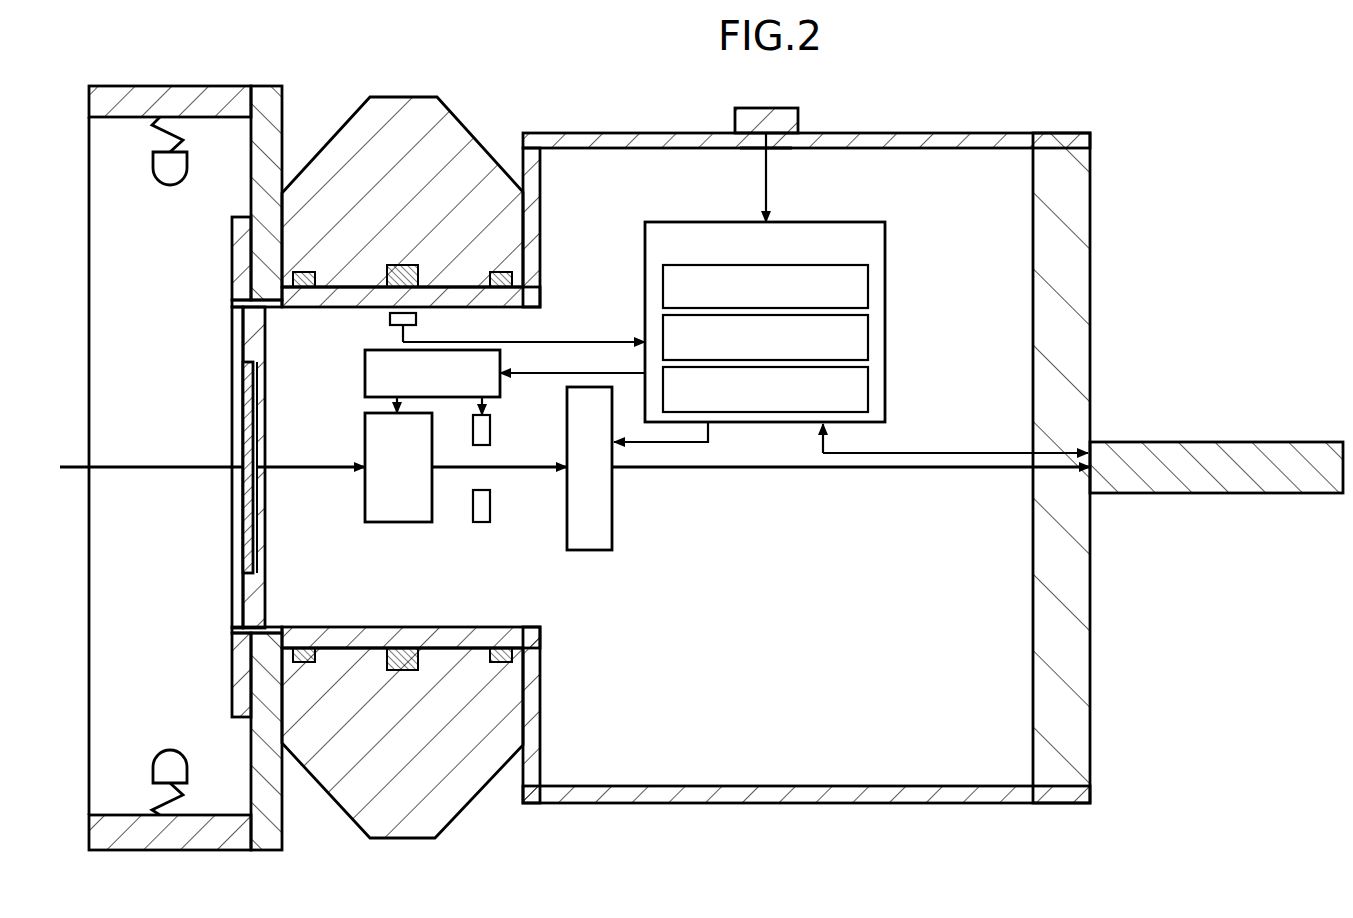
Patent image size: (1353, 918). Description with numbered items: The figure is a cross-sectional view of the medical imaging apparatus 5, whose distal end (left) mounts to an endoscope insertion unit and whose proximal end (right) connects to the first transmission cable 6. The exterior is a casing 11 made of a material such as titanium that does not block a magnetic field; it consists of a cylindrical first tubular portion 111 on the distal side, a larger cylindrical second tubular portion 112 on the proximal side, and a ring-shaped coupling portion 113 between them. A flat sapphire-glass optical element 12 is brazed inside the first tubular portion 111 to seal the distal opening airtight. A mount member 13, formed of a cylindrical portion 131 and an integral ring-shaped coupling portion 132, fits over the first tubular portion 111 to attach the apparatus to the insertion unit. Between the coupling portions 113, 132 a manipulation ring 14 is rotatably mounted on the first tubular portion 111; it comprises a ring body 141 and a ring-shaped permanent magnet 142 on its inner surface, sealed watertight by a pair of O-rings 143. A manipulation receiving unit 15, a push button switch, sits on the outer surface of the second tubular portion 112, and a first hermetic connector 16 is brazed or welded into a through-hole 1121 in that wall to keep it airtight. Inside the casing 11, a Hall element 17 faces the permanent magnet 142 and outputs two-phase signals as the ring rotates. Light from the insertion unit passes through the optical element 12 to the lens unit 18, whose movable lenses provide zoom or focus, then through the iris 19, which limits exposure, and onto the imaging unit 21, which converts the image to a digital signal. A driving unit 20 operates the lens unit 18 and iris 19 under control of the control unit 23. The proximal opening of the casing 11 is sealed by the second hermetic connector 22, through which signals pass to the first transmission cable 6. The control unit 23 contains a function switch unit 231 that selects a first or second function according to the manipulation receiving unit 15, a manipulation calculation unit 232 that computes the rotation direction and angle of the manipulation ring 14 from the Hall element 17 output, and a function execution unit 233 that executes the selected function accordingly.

The medical imaging apparatus 5 is at (1148, 84).
The first transmission cable 6 is at (1270, 442).
The casing 11 is at (686, 410).
The first tubular portion 111 is at (452, 297).
The second tubular portion 112 is at (806, 427).
The through-hole 1121 is at (785, 152).
The coupling portion 113 is at (523, 175).
The optical element 12 is at (243, 420).
The mount member 13 is at (185, 433).
The cylindrical portion 131 is at (168, 105).
The coupling portion 132 is at (248, 450).
The manipulation ring 14 is at (411, 770).
The ring body 141 is at (452, 812).
The permanent magnet 142 is at (402, 672).
The O-rings 143 is at (303, 664).
The manipulation receiving unit 15 is at (780, 125).
The first hermetic connector 16 is at (758, 133).
The Hall element 17 is at (390, 320).
The lens unit 18 is at (397, 522).
The iris 19 is at (482, 522).
The driving unit 20 is at (365, 370).
The imaging unit 21 is at (590, 550).
The second hermetic connector 22 is at (1068, 300).
The control unit 23 is at (801, 308).
The function switch unit 231 is at (868, 286).
The manipulation calculation unit 232 is at (868, 336).
The function execution unit 233 is at (868, 386).